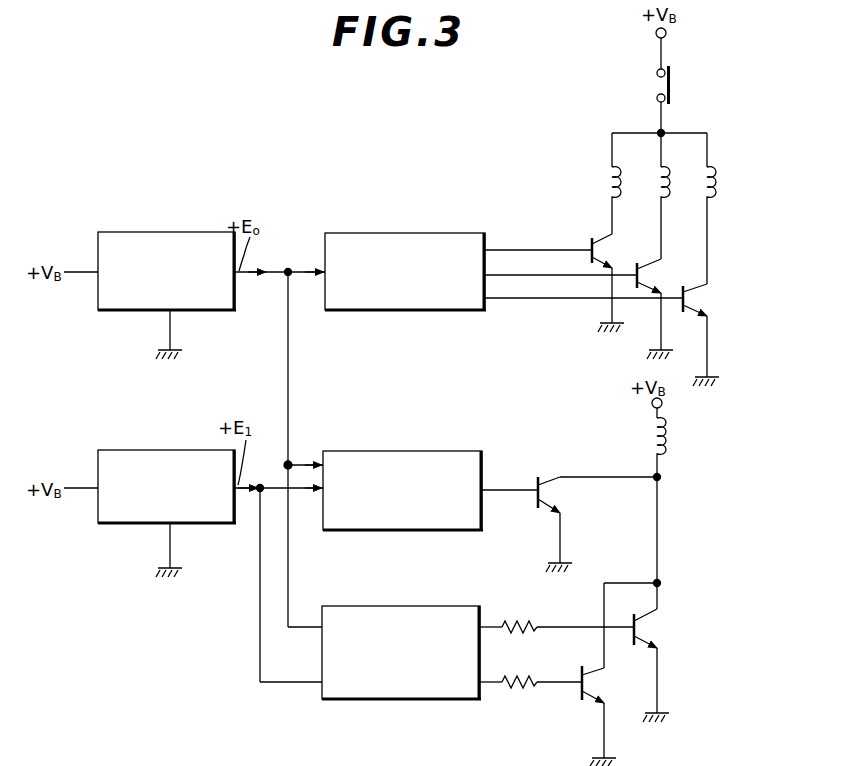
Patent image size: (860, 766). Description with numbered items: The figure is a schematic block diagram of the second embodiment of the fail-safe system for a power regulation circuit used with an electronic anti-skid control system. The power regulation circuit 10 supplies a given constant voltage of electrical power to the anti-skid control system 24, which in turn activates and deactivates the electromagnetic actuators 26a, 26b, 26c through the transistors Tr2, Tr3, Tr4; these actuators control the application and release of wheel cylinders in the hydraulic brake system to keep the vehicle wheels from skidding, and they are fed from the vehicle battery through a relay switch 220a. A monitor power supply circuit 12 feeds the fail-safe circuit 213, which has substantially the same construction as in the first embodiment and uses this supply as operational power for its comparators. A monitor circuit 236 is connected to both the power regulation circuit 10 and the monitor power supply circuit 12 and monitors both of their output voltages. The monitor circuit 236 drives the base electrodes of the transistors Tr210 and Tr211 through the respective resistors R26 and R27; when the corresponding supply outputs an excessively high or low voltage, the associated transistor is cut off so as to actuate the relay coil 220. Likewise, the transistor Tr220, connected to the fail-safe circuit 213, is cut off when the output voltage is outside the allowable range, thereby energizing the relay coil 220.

The power regulation circuit 10 is at (136, 232).
The monitor power supply circuit 12 is at (155, 450).
The anti-skid control system 24 is at (380, 232).
The fail-safe circuit 213 is at (385, 451).
The monitor circuit 236 is at (386, 606).
The relay coil 220 is at (668, 441).
The relay switch 220a is at (672, 87).
The electromagnetic actuator 26a is at (604, 182).
The electromagnetic actuator 26b is at (652, 170).
The electromagnetic actuator 26c is at (716, 182).
The transistor Tr2 is at (600, 254).
The transistor Tr3 is at (645, 278).
The transistor Tr4 is at (690, 299).
The transistor Tr220 is at (550, 491).
The transistor Tr210 is at (645, 630).
The transistor Tr211 is at (598, 683).
The resistor R26 is at (519, 613).
The resistor R27 is at (519, 668).